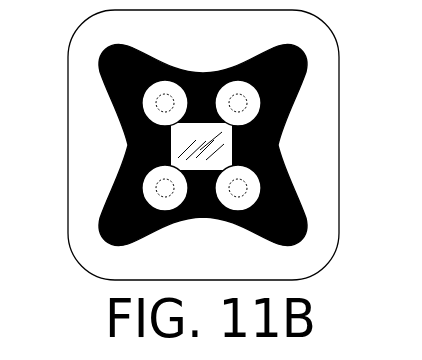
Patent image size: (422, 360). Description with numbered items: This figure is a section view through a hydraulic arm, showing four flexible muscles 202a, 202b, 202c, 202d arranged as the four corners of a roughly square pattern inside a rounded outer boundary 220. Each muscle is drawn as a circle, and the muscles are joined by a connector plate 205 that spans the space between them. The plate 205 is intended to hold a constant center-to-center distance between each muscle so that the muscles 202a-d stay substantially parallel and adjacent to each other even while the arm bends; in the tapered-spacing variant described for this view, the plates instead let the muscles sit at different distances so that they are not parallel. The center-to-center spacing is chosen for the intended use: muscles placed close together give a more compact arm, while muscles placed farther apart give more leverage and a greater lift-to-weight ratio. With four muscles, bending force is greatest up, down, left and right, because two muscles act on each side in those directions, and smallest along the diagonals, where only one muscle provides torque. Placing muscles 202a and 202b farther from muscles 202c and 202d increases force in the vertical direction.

The housing 220 is at (67, 168).
The connector plate 205 is at (267, 141).
The flexible muscle 202a is at (101, 54).
The flexible muscle 202b is at (298, 46).
The flexible muscle 202c is at (102, 242).
The flexible muscle 202d is at (305, 237).